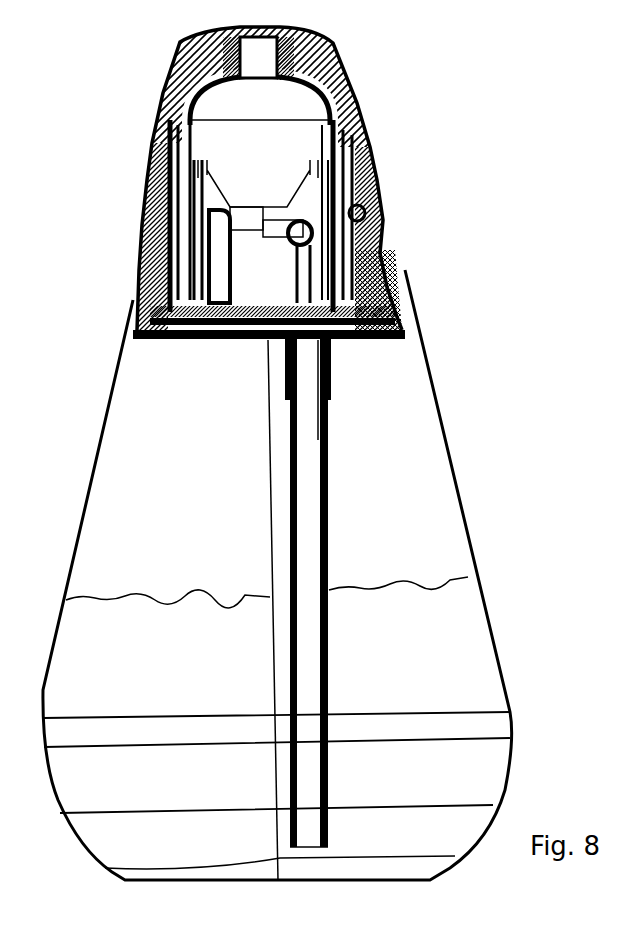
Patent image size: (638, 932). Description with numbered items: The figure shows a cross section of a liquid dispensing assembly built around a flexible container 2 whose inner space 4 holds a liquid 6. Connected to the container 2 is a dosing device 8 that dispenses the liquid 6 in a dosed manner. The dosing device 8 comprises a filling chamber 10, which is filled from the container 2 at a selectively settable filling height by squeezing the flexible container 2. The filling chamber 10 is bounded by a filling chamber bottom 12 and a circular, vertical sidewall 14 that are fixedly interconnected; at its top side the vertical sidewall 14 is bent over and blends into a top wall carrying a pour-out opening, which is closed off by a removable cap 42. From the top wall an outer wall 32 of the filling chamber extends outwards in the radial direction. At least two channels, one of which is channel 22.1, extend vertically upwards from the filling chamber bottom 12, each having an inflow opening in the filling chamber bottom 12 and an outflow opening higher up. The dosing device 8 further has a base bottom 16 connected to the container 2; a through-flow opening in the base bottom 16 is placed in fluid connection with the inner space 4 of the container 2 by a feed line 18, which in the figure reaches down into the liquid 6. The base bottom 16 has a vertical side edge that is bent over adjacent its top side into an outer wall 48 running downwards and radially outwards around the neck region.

The flexible container 2 is at (462, 522).
The inner space 4 is at (276, 727).
The liquid 6 is at (133, 592).
The dosing device 8 is at (306, 178).
The filling chamber 10 is at (260, 178).
The filling chamber bottom 12 is at (253, 310).
The vertical sidewall 14 is at (383, 205).
The base bottom 16 is at (221, 338).
The feed line 18 is at (318, 440).
The channel 22.1 is at (383, 268).
The outer wall 32 is at (376, 165).
The removable cap 42 is at (337, 75).
The outer wall 48 is at (387, 292).